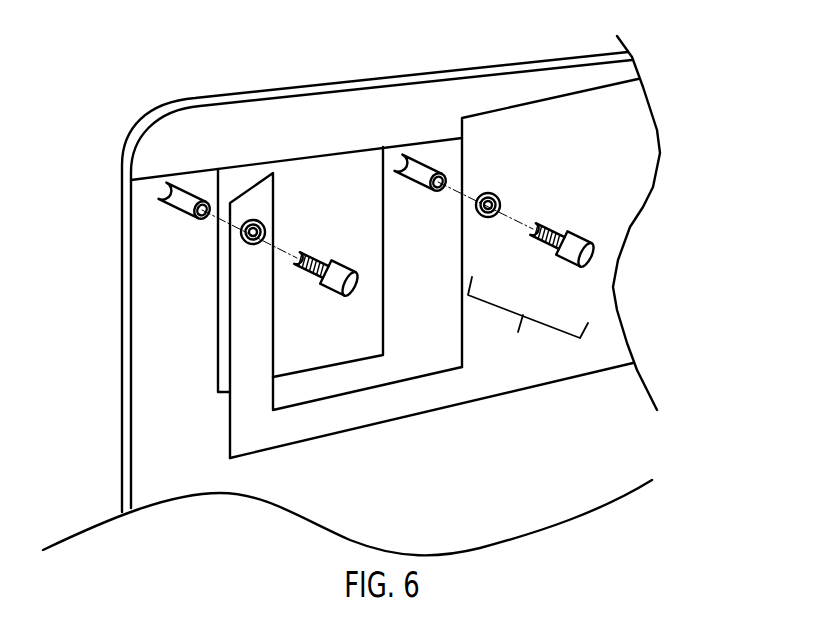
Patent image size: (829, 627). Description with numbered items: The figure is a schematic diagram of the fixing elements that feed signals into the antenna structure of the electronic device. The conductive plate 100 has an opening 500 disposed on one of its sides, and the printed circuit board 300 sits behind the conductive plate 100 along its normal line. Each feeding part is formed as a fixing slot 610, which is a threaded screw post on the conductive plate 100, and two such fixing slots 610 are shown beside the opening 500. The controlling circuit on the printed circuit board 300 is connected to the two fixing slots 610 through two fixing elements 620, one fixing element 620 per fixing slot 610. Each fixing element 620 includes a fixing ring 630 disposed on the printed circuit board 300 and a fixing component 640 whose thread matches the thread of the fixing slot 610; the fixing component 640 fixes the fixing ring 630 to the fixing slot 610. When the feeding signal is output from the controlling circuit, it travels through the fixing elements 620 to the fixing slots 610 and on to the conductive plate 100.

The conductive plate 100 is at (172, 395).
The printed circuit board 300 is at (603, 192).
The opening 500 is at (326, 183).
The fixing slot 610 is at (177, 213).
The fixing element 620 is at (528, 319).
The fixing ring 630 is at (253, 244).
The fixing component 640 is at (333, 300).